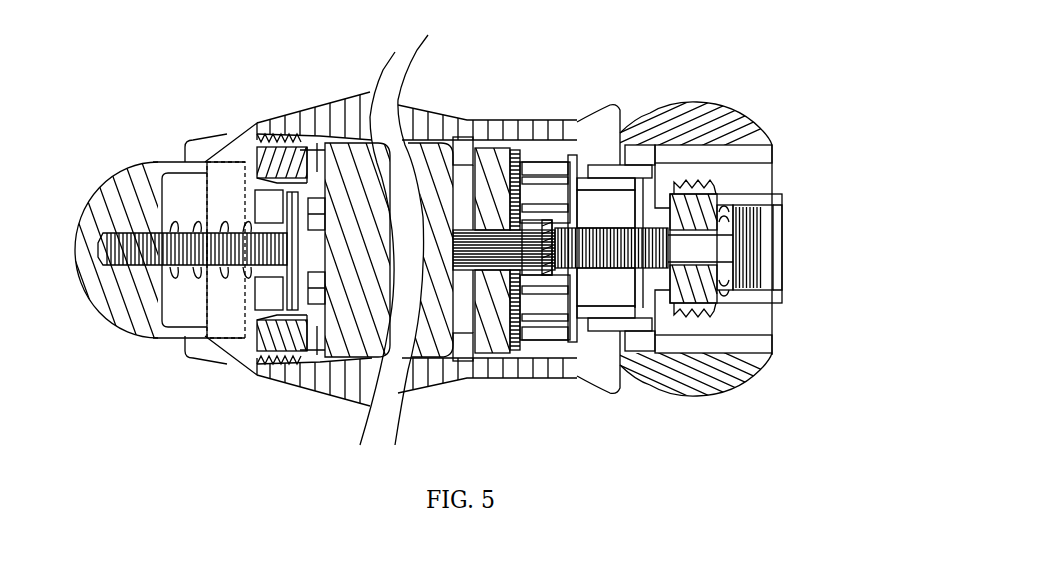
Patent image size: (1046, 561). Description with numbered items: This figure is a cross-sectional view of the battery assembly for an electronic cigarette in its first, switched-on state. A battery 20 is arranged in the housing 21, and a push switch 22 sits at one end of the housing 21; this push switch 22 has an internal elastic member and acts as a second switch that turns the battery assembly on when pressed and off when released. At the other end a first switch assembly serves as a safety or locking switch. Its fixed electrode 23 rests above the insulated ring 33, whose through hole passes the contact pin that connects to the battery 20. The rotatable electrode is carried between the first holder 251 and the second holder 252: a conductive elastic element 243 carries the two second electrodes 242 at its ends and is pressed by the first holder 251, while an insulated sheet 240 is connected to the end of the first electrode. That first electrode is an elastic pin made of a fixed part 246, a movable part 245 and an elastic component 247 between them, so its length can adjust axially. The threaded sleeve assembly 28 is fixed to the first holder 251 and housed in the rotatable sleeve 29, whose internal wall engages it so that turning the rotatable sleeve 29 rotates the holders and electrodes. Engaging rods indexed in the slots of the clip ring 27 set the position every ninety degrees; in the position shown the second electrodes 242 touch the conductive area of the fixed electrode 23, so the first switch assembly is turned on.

The battery 20 is at (428, 343).
The housing 21 is at (308, 118).
The push switch 22 is at (120, 330).
The fixed electrode 23 is at (493, 118).
The clip ring 27 is at (507, 350).
The threaded sleeve assembly 28 is at (775, 193).
The rotatable sleeve 29 is at (703, 122).
The insulated ring 33 is at (472, 352).
The insulated sheet 240 is at (530, 340).
The second electrodes 242 is at (525, 118).
The conductive elastic element 243 is at (560, 350).
The movable part 245 is at (775, 238).
The fixed part 246 is at (637, 340).
The elastic component 247 is at (698, 320).
The first holder 251 is at (607, 118).
The second holder 252 is at (576, 118).